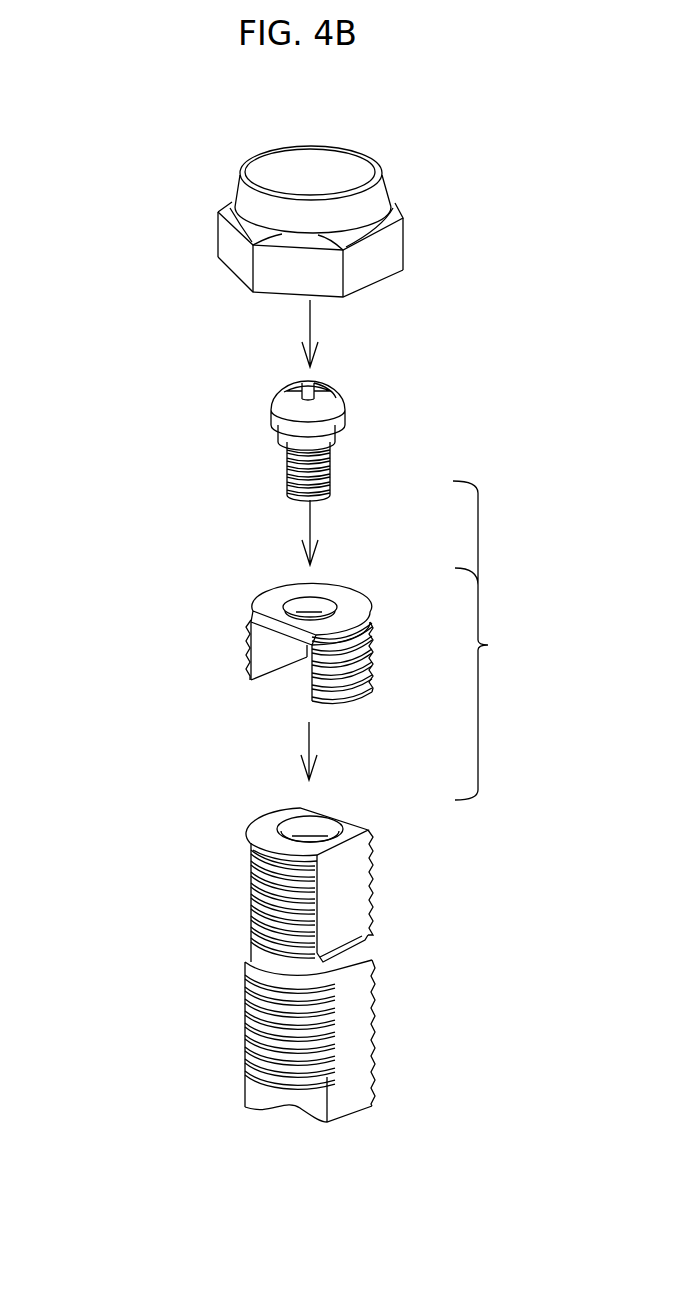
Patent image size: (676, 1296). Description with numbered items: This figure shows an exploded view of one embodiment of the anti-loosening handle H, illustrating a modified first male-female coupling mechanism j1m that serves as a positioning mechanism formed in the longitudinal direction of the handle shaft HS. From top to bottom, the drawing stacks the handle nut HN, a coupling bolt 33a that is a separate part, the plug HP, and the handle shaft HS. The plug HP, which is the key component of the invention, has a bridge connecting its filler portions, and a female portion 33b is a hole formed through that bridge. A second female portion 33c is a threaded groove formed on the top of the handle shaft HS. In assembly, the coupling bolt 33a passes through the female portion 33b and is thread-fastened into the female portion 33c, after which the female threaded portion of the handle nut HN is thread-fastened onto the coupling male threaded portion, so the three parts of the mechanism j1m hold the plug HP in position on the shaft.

The hook assembly H is at (262, 134).
The handle nut HN is at (212, 163).
The plug HP is at (203, 590).
The handle shaft HS is at (214, 996).
The coupling bolt 33a is at (330, 465).
The female portion 33b is at (315, 604).
The female portion 33c is at (315, 828).
The first male-female coupling mechanism j1m is at (492, 640).